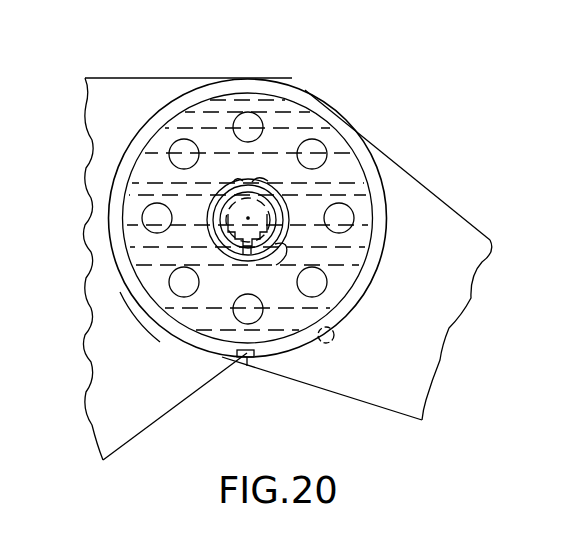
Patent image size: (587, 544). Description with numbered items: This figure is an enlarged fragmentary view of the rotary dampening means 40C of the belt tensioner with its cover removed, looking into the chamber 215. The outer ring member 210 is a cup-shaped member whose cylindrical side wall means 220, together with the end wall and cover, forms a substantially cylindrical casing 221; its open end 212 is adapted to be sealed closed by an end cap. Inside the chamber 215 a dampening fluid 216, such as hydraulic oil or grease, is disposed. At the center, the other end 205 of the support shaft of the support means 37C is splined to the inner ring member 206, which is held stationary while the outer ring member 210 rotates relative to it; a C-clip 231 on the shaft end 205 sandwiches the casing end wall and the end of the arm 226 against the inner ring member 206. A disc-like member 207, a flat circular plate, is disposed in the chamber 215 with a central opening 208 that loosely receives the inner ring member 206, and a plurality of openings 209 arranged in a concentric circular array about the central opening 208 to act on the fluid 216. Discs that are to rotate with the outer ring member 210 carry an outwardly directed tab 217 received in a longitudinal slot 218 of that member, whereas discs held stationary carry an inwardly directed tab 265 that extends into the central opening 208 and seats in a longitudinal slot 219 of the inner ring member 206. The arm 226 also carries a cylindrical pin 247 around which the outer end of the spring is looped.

The housing plate 37C is at (102, 90).
The open end 212 is at (230, 83).
The arm 226 is at (379, 255).
The rotary dampening means 40C is at (300, 202).
The outer ring member 210 is at (323, 96).
The side wall means 220 is at (387, 193).
The chamber 215 is at (156, 173).
The dampening fluid 216 is at (348, 263).
The disc-like member 207 is at (208, 322).
The openings 209 is at (255, 114).
The longitudinal slot 219 is at (234, 181).
The inwardly directed tab 265 is at (276, 186).
The C-clip 231 is at (214, 196).
The inner ring member 206 is at (217, 237).
The other end 205 is at (236, 216).
The central opening 208 is at (284, 262).
The casing 221 is at (140, 310).
The longitudinal slot 218 is at (237, 360).
The outwardly directed tab 217 is at (247, 367).
The cylindrical pin 247 is at (327, 343).